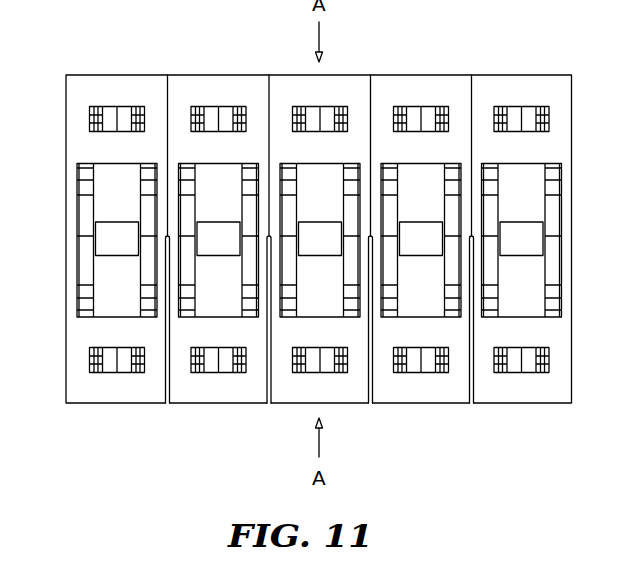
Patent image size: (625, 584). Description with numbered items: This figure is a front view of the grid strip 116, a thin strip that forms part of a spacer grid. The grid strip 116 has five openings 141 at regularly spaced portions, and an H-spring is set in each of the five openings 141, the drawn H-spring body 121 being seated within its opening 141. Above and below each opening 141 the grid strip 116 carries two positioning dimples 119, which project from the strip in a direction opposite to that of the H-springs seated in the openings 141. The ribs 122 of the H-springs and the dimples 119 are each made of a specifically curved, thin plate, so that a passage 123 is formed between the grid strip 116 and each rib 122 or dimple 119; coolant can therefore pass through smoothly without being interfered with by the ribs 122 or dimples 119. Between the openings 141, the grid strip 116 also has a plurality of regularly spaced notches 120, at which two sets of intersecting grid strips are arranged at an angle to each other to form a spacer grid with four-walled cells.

The grid strip 116 is at (470, 428).
The positioning dimple 119 is at (110, 115).
The notch 120 is at (372, 388).
The module housing 121 is at (392, 170).
The rib 122 is at (108, 229).
The passage 123 is at (207, 115).
The opening 141 is at (107, 290).